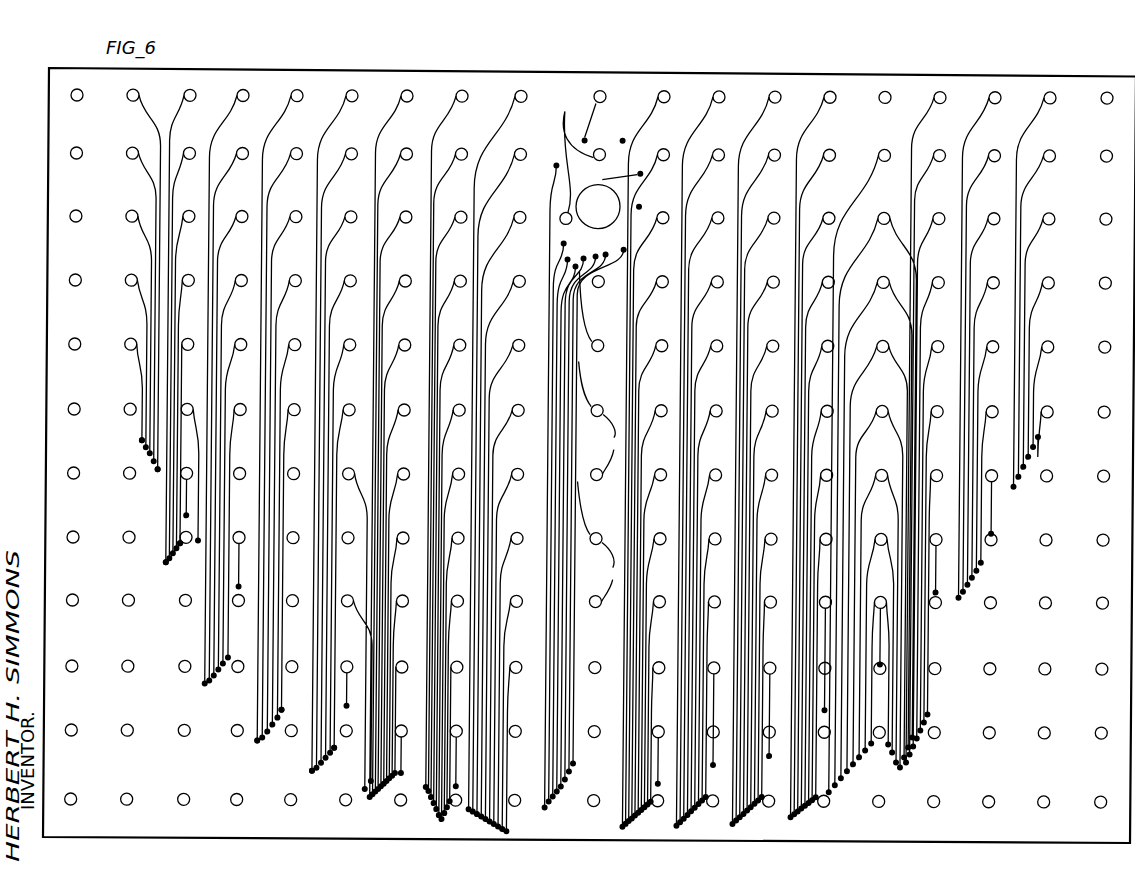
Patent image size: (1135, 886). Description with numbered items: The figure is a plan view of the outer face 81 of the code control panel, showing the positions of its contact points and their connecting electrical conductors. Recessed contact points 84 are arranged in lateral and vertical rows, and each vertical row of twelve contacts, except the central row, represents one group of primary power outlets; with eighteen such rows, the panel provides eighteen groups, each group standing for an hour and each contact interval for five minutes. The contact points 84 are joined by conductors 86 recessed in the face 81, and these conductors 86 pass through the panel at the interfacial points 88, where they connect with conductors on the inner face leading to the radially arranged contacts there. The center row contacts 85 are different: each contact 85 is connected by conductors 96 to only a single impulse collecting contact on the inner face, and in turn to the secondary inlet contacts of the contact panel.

The outer face 81 is at (44, 826).
The contact points 84 is at (73, 467).
The center row contacts 85 is at (594, 97).
The conductors 86 is at (153, 106).
The interfacial points 88 is at (158, 469).
The conductors 96 is at (603, 150).